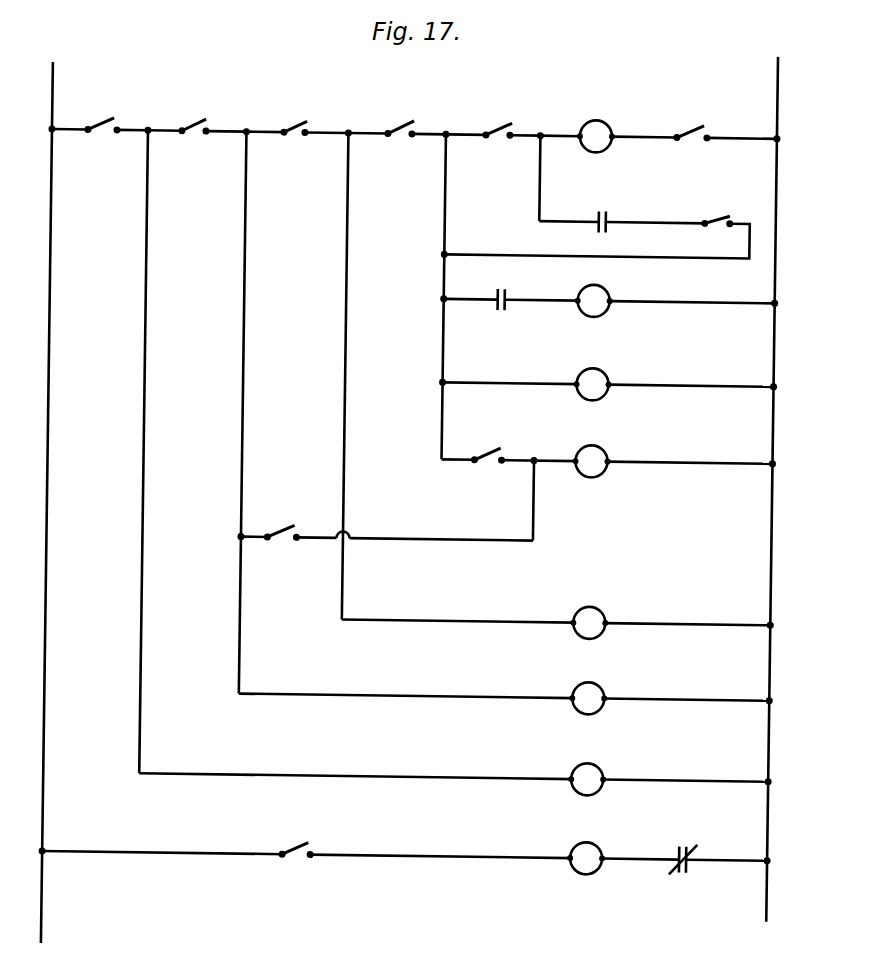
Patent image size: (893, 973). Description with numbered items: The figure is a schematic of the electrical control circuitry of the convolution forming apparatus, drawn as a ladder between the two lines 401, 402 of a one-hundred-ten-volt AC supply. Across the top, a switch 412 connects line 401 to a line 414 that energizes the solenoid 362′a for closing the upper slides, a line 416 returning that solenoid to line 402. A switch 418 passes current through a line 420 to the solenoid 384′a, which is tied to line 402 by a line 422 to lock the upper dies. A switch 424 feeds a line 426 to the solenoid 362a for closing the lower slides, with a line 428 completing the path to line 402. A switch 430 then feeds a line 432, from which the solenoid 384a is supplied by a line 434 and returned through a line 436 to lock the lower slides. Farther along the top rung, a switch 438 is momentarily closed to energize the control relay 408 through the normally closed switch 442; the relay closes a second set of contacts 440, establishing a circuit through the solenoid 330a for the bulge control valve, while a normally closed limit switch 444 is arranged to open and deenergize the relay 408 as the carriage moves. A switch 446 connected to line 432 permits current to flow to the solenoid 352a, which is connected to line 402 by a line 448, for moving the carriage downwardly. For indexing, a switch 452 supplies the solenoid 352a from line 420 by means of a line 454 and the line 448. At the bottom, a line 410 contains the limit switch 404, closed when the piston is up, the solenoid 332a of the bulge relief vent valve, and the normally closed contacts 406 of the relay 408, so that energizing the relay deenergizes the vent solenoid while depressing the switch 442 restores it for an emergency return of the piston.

The line 401 is at (58, 90).
The line 402 is at (779, 95).
The limit switch 404 is at (300, 846).
The normally closed contacts 406 is at (750, 824).
The control relay 408 is at (598, 112).
The line 410 is at (172, 848).
The switch 412 is at (100, 116).
The line 414 is at (150, 203).
The line 416 is at (741, 755).
The switch 418 is at (198, 118).
The line 420 is at (248, 216).
The line 422 is at (737, 675).
The switch 424 is at (298, 116).
The line 426 is at (352, 212).
The line 428 is at (728, 601).
The switch 430 is at (404, 116).
The line 432 is at (441, 271).
The line 434 is at (498, 380).
The line 436 is at (729, 413).
The switch 438 is at (506, 116).
The contacts 440 is at (655, 186).
The switch 442 is at (728, 94).
The limit switch 444 is at (757, 185).
The switch 446 is at (506, 440).
The line 448 is at (742, 492).
The switch 452 is at (285, 520).
The line 454 is at (436, 520).
The solenoid 330a is at (598, 278).
The solenoid 384a is at (598, 360).
The solenoid 352a is at (598, 438).
The solenoid 362a is at (598, 599).
The solenoid 384′a is at (598, 675).
The solenoid 362′a is at (598, 756).
The solenoid 332a is at (621, 845).